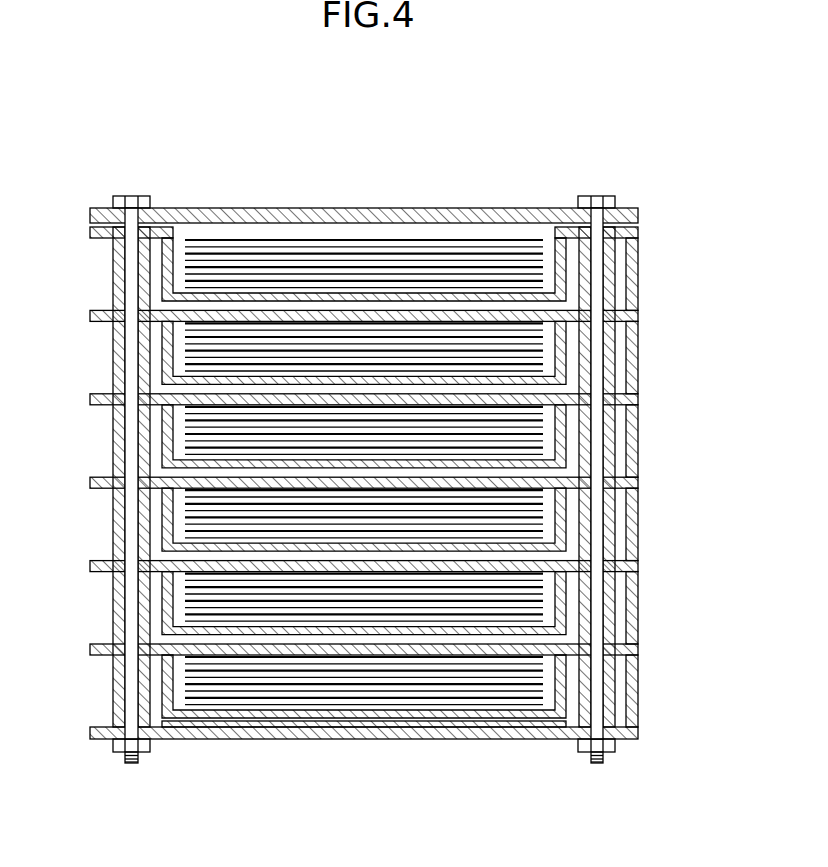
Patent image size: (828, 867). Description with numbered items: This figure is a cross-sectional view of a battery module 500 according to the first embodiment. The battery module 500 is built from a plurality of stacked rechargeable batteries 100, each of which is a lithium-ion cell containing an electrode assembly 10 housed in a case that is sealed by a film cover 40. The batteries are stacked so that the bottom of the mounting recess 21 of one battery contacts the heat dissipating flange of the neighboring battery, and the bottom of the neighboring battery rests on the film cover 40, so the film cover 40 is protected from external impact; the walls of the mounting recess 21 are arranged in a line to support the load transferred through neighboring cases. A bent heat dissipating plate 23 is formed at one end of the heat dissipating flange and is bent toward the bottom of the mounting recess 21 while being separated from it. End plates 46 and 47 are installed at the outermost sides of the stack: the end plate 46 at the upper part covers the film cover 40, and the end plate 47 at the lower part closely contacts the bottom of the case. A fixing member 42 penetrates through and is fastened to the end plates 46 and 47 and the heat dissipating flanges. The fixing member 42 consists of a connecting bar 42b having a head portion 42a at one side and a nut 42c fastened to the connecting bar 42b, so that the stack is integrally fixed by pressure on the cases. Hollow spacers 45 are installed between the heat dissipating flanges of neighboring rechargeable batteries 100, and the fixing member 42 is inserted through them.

The battery module 500 is at (370, 130).
The rechargeable battery 100 is at (658, 232).
The electrode assembly 10 is at (273, 218).
The mounting recess 21 is at (568, 277).
The heat dissipating plate 23 is at (640, 257).
The film cover 40 is at (388, 224).
The fixing member 42 is at (160, 183).
The head portion 42a is at (118, 196).
The connecting bar 42b is at (130, 351).
The nut 42c is at (118, 753).
The spacer 45 is at (120, 272).
The end plate 46 is at (467, 209).
The end plate 47 is at (467, 741).